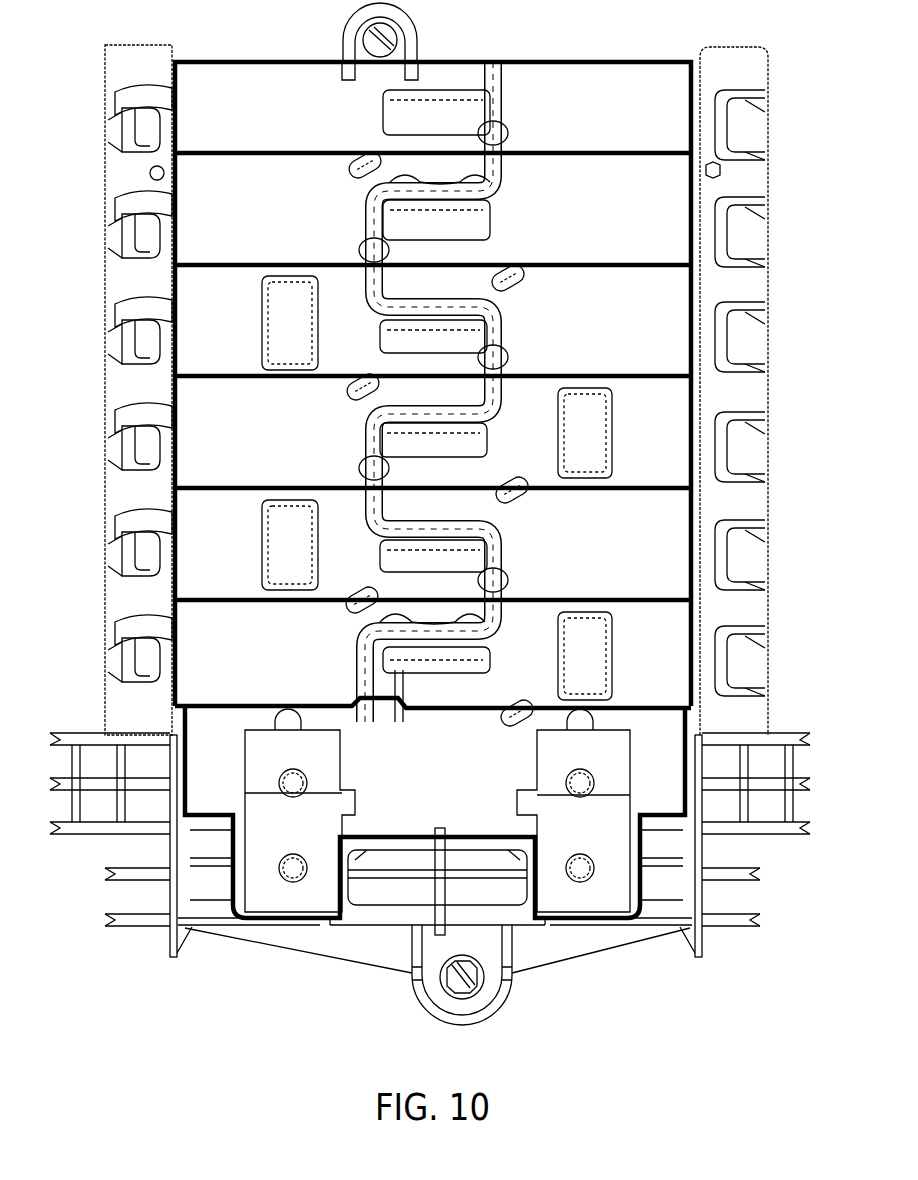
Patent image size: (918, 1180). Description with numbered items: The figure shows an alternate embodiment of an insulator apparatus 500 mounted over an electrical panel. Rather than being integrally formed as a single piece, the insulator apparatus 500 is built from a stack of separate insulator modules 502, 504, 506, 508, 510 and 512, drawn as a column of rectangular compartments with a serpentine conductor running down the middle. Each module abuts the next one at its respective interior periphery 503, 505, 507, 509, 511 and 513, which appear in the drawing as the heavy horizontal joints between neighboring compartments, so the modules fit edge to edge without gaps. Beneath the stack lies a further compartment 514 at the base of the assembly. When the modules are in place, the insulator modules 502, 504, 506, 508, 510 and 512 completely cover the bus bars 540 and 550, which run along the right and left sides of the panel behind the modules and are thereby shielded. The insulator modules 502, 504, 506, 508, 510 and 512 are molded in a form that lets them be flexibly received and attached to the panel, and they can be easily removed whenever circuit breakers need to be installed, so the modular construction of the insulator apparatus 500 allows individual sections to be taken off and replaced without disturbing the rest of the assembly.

The insulator apparatus 500 is at (513, 62).
The insulator module 502 is at (622, 121).
The interior periphery 503 is at (228, 153).
The insulator module 504 is at (624, 222).
The interior periphery 505 is at (233, 265).
The insulator module 506 is at (624, 334).
The interior periphery 507 is at (512, 376).
The insulator module 508 is at (654, 439).
The interior periphery 509 is at (250, 488).
The insulator module 510 is at (632, 554).
The interior periphery 511 is at (512, 600).
The insulator module 512 is at (660, 662).
The interior periphery 513 is at (228, 708).
The seventh compartment 514 is at (668, 770).
The bus bar 540 is at (585, 83).
The bus bar 550 is at (208, 88).